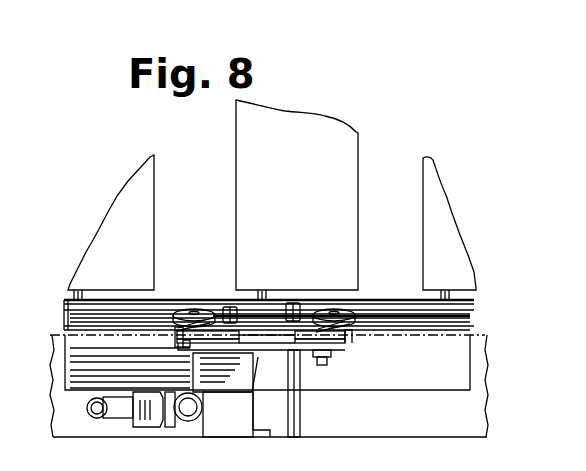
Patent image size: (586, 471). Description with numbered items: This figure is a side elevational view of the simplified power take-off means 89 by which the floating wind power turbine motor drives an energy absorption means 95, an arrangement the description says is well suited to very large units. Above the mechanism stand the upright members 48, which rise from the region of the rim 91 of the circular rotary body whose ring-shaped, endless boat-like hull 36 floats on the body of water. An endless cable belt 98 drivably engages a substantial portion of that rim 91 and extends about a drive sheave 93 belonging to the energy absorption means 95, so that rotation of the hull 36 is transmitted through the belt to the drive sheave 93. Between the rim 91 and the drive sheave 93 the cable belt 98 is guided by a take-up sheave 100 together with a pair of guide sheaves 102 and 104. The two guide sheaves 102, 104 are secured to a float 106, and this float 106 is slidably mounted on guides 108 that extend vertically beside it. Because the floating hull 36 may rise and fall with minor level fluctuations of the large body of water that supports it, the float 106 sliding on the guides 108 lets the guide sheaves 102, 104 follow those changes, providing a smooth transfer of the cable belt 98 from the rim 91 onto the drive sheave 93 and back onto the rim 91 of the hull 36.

The hull 36 is at (466, 331).
The panel 48 is at (147, 204).
The power take-off means 89 is at (362, 341).
The rim 91 is at (66, 306).
The drive sheave 93 is at (188, 343).
The energy absorption means 95 is at (215, 410).
The cable belt 98 is at (404, 326).
The take-up sheave 100 is at (345, 346).
The guide sheave 102 is at (188, 309).
The guide sheave 104 is at (333, 309).
The float 106 is at (176, 338).
The guides 108 is at (238, 305).